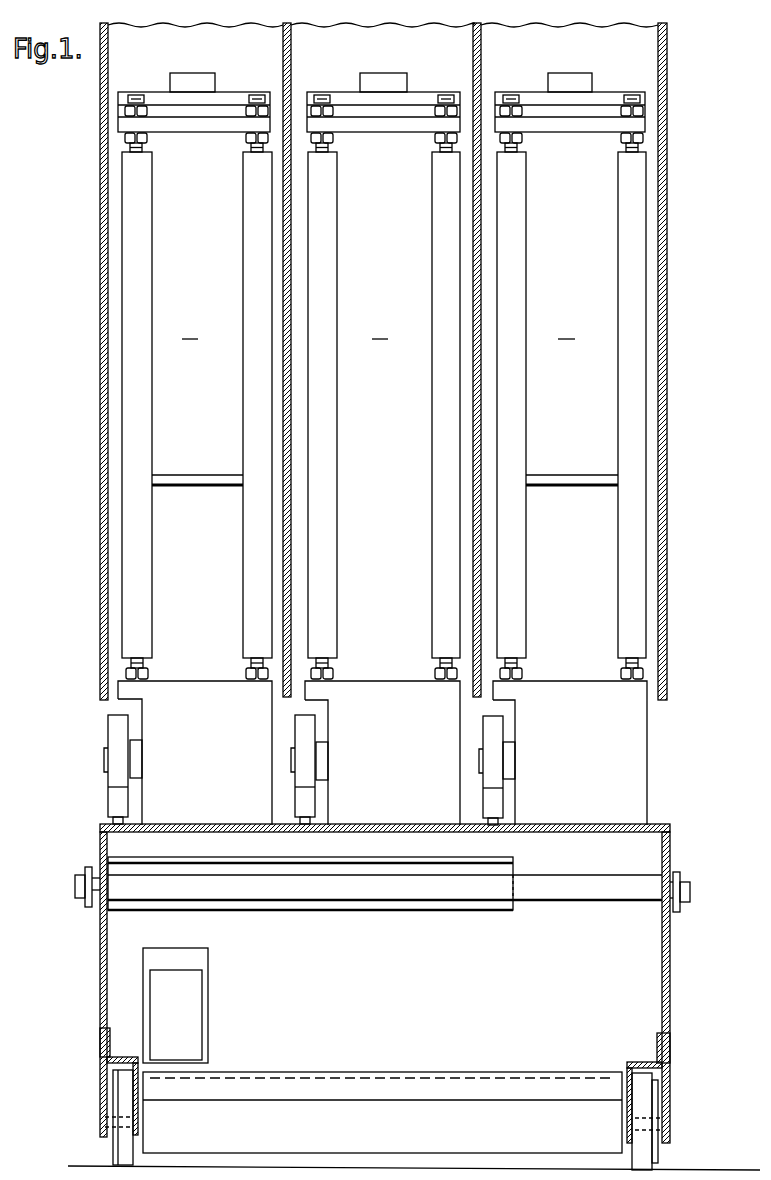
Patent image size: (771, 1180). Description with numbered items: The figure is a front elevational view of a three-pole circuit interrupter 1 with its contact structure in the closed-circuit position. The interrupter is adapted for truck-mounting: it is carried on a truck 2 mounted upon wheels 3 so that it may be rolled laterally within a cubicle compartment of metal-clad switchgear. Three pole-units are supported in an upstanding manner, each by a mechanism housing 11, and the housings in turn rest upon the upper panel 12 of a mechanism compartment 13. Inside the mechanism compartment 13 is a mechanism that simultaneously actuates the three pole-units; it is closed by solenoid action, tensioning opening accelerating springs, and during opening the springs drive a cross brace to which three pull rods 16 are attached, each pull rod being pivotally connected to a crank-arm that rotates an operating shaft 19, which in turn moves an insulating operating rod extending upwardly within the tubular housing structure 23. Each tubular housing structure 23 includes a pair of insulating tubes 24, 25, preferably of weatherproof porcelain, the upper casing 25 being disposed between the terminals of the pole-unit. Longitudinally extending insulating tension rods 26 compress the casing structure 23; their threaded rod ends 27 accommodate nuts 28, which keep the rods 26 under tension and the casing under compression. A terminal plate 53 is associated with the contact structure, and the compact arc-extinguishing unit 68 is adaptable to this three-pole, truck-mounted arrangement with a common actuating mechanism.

The three-pole circuit interrupter 1 is at (68, 192).
The truck 2 is at (670, 985).
The wheels 3 is at (120, 1150).
The mechanism housing 11 is at (173, 704).
The upper panel 12 is at (568, 826).
The mechanism compartment 13 is at (410, 995).
The pull rods 16 is at (122, 802).
The operating shaft 19 is at (296, 755).
The tubular housing structure 23 is at (175, 585).
The insulating tube 24 is at (163, 528).
The insulating tube 25 is at (178, 428).
The tension rods 26 is at (138, 397).
The rod ends 27 is at (245, 152).
The nuts 28 is at (126, 108).
The terminal plate 53 is at (218, 488).
The arc-extinguishing unit 68 is at (160, 317).